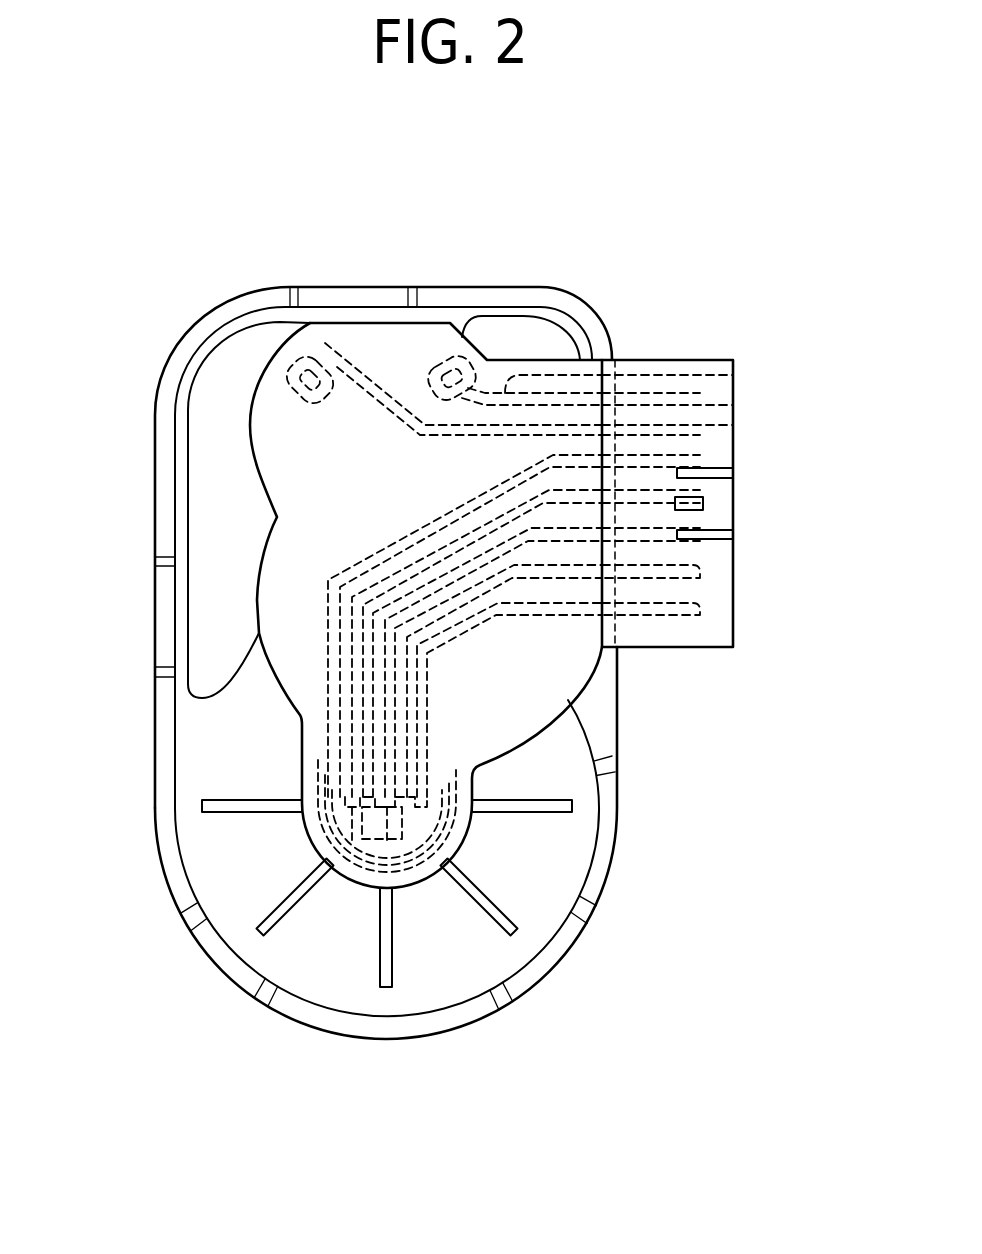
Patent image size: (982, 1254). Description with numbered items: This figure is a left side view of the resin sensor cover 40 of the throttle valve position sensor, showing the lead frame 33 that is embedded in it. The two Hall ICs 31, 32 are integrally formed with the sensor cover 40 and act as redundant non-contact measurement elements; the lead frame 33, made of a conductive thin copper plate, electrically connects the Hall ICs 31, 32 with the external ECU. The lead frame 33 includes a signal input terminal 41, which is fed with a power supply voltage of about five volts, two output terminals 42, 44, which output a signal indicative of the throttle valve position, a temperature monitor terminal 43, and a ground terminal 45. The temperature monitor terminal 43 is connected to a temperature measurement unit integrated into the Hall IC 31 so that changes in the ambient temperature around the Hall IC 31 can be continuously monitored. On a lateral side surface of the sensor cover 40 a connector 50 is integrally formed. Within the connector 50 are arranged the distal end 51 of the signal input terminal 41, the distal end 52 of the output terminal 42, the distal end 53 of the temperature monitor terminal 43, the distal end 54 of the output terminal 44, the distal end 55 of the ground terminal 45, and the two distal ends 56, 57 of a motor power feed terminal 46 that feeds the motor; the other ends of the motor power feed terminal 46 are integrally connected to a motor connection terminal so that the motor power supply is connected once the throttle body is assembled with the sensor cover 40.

The Hall IC 31 is at (453, 838).
The Hall IC 32 is at (352, 860).
The lead frame 33 is at (322, 740).
The sensor cover 40 is at (203, 958).
The signal input terminal 41 is at (390, 722).
The output terminal 42 is at (427, 700).
The temperature monitor terminal 43 is at (427, 677).
The output terminal 44 is at (330, 672).
The ground terminal 45 is at (328, 698).
The motor power feed terminal 46 is at (597, 540).
The connector 50 is at (733, 648).
The distal end of signal input terminal 51 is at (733, 532).
The distal end of output terminal 52 is at (733, 578).
The distal end of temperature monitor terminal 53 is at (733, 617).
The distal end of output terminal 54 is at (733, 505).
The distal end of ground terminal 55 is at (733, 460).
The distal end of motor power feed terminal 56 is at (733, 425).
The distal end of motor power feed terminal 57 is at (733, 393).